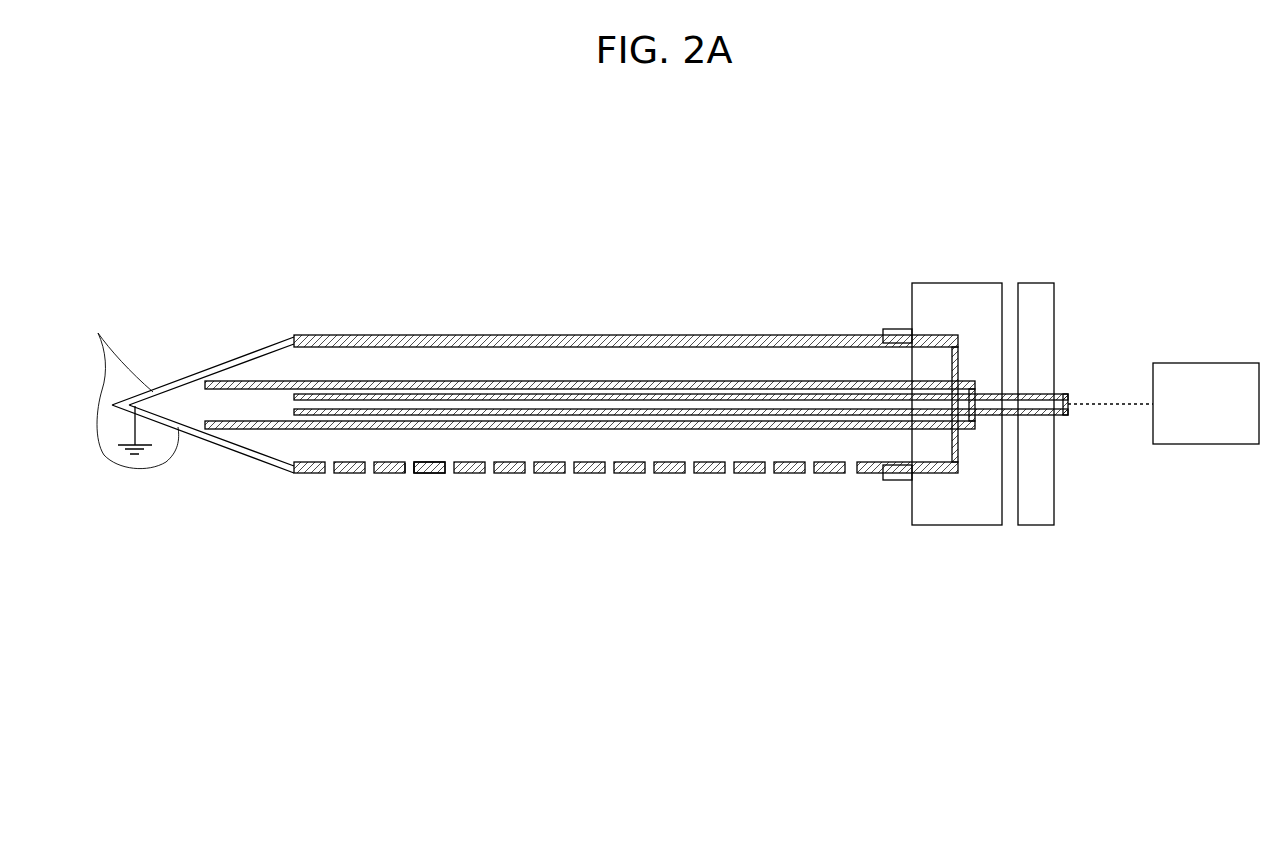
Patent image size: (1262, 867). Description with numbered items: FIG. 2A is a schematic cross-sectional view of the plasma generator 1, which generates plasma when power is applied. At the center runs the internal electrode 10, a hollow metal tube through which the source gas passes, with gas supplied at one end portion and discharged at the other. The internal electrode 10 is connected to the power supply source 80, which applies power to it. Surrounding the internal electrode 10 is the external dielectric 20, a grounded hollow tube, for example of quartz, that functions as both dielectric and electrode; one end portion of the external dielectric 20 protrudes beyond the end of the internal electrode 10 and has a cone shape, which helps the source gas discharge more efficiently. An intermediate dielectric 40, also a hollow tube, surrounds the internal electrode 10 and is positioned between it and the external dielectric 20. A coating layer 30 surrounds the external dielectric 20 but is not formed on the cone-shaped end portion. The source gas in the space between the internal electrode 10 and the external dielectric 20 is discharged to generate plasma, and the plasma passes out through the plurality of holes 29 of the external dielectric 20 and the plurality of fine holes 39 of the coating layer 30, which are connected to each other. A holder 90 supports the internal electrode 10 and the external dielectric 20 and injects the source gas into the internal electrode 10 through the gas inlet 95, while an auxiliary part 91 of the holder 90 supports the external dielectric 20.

The plasma generator 1 is at (629, 262).
The internal electrode 10 is at (1020, 415).
The external dielectric 20 is at (183, 391).
The holes 29 is at (418, 474).
The coating layer 30 is at (375, 335).
The fine holes 39 is at (405, 474).
The intermediate dielectric 40 is at (237, 389).
The power supply source 80 is at (1202, 378).
The holder 90 is at (1054, 320).
The auxiliary part 91 is at (897, 481).
The gas inlet 95 is at (1003, 303).